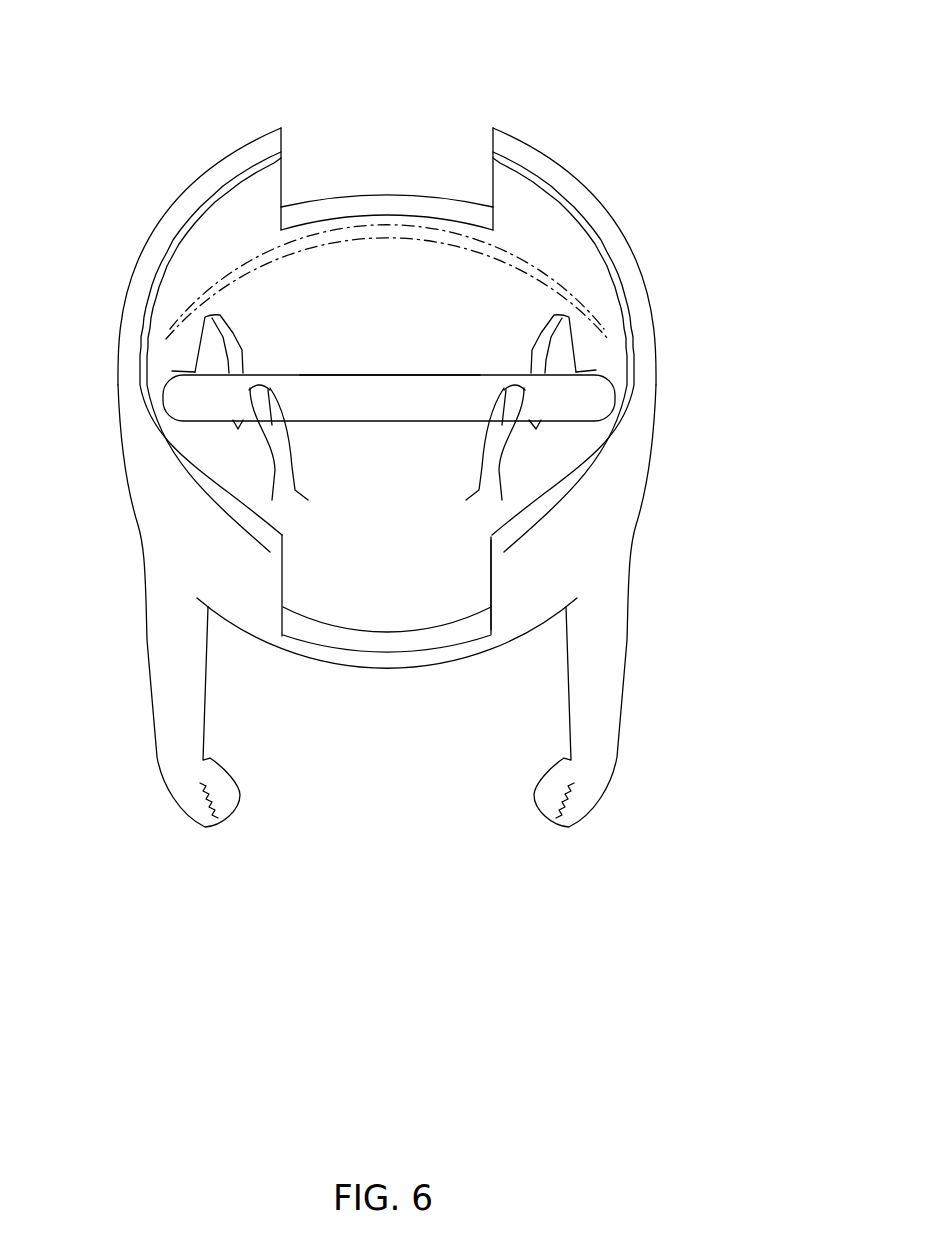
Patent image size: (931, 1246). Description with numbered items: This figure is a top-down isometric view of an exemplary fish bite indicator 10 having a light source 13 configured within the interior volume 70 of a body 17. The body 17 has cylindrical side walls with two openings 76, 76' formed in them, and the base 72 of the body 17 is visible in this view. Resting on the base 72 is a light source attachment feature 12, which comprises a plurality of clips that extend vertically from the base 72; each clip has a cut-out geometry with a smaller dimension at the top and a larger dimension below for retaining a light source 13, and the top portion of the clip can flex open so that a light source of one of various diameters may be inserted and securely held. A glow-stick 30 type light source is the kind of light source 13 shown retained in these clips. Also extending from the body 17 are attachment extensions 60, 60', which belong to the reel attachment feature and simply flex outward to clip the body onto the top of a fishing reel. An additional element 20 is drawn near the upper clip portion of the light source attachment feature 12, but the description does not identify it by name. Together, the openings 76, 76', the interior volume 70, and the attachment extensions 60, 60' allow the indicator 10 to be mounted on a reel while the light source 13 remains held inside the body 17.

The fish bite indicator 10 is at (248, 118).
The light source attachment feature 12 is at (270, 433).
The light source 13 is at (373, 403).
The body 17 is at (628, 443).
The upper clip 20 is at (560, 357).
The glow-stick 30 is at (337, 400).
The attachment extension 60 is at (143, 606).
The attachment extension 60' is at (640, 606).
The interior volume 70 is at (223, 268).
The body base 72 is at (445, 542).
The opening 76 is at (387, 677).
The opening 76' is at (387, 150).